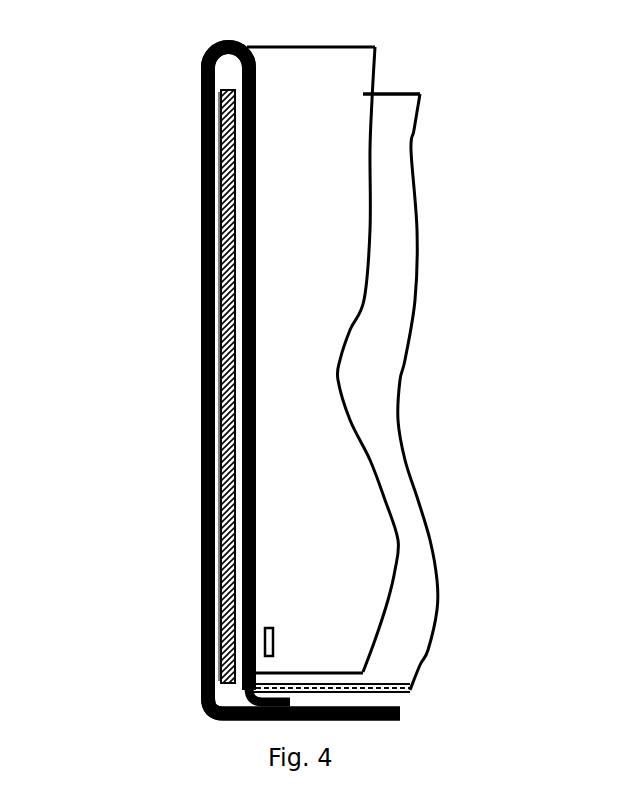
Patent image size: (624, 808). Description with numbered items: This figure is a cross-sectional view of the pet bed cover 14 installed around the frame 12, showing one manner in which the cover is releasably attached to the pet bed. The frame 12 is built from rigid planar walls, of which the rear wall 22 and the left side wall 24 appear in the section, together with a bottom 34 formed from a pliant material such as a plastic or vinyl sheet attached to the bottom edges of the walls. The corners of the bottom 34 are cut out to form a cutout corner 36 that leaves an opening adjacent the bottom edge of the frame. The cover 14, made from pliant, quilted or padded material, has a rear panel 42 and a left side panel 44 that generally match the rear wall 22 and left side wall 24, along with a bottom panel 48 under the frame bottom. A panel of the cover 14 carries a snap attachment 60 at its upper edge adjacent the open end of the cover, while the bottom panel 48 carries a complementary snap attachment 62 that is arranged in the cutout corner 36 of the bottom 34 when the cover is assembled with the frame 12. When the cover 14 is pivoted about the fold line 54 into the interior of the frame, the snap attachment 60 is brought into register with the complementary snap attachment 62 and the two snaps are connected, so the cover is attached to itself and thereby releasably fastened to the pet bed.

The frame 12 is at (383, 93).
The cover 14 is at (203, 147).
The rear wall 22 is at (390, 370).
The left side wall 24 is at (220, 452).
The bottom 34 is at (410, 686).
The cutout corner 36 is at (200, 697).
The rear panel 42 is at (320, 245).
The left side panel 44 is at (242, 393).
The bottom panel 48 is at (400, 711).
The fold line 54 is at (215, 48).
The snap attachment 60 is at (273, 632).
The complementary snap attachment 62 is at (265, 690).